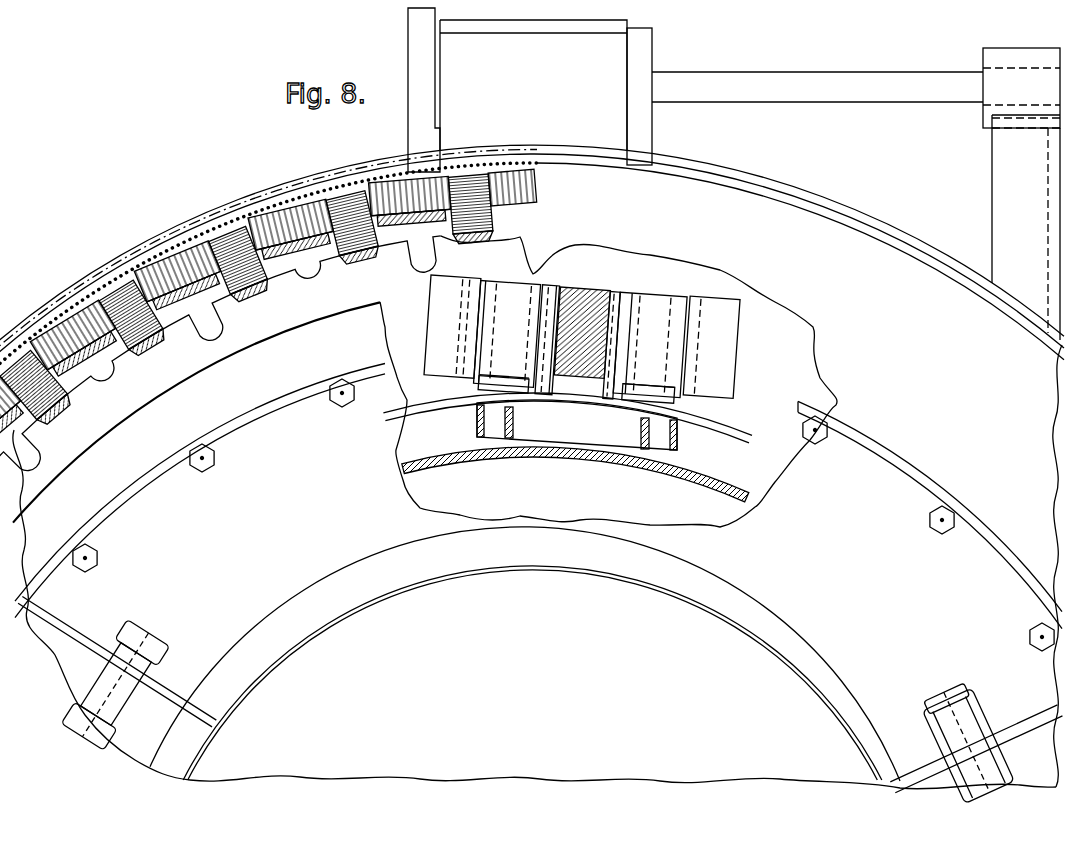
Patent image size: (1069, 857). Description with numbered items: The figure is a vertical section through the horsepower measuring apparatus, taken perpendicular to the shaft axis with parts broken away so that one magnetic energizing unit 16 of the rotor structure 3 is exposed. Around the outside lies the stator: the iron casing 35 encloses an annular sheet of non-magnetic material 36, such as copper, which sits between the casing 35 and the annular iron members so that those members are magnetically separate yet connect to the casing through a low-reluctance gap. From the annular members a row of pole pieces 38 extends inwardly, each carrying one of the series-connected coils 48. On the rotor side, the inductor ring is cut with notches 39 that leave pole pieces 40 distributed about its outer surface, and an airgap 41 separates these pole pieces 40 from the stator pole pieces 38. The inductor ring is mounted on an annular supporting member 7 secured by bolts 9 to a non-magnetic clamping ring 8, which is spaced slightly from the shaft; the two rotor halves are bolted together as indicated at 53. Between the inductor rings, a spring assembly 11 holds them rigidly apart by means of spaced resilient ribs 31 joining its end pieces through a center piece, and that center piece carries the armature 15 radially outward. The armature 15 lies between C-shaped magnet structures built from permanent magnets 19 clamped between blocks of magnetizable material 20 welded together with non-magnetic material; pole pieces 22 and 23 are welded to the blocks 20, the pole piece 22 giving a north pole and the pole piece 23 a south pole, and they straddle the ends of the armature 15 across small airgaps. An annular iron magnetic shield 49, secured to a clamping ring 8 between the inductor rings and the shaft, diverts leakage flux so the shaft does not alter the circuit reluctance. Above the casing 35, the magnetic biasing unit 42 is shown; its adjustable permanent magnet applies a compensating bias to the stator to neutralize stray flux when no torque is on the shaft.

The rotor structure 3 is at (343, 509).
The annular supporting member 7 is at (441, 406).
The clamping ring 8 is at (380, 451).
The bolts 9 is at (328, 398).
The spring assembly 11 is at (562, 437).
The armature 15 is at (607, 292).
The magnetic energizing unit 16 is at (449, 292).
The permanent magnets 19 is at (466, 294).
The blocks of magnetizable material 20 is at (440, 318).
The pole piece 22 is at (668, 314).
The pole piece 23 is at (512, 302).
The resilient ribs 31 is at (577, 427).
The iron casing 35 is at (218, 224).
The annular sheet of non-magnetic material 36 is at (232, 221).
The pole pieces 38 is at (340, 254).
The notches 39 is at (428, 264).
The pole pieces 40 is at (428, 258).
The airgap 41 is at (222, 302).
The magnetic biasing unit 42 is at (668, 47).
The coils 48 is at (330, 230).
The annular iron magnetic shield 49 is at (562, 462).
The bolts 53 is at (166, 634).